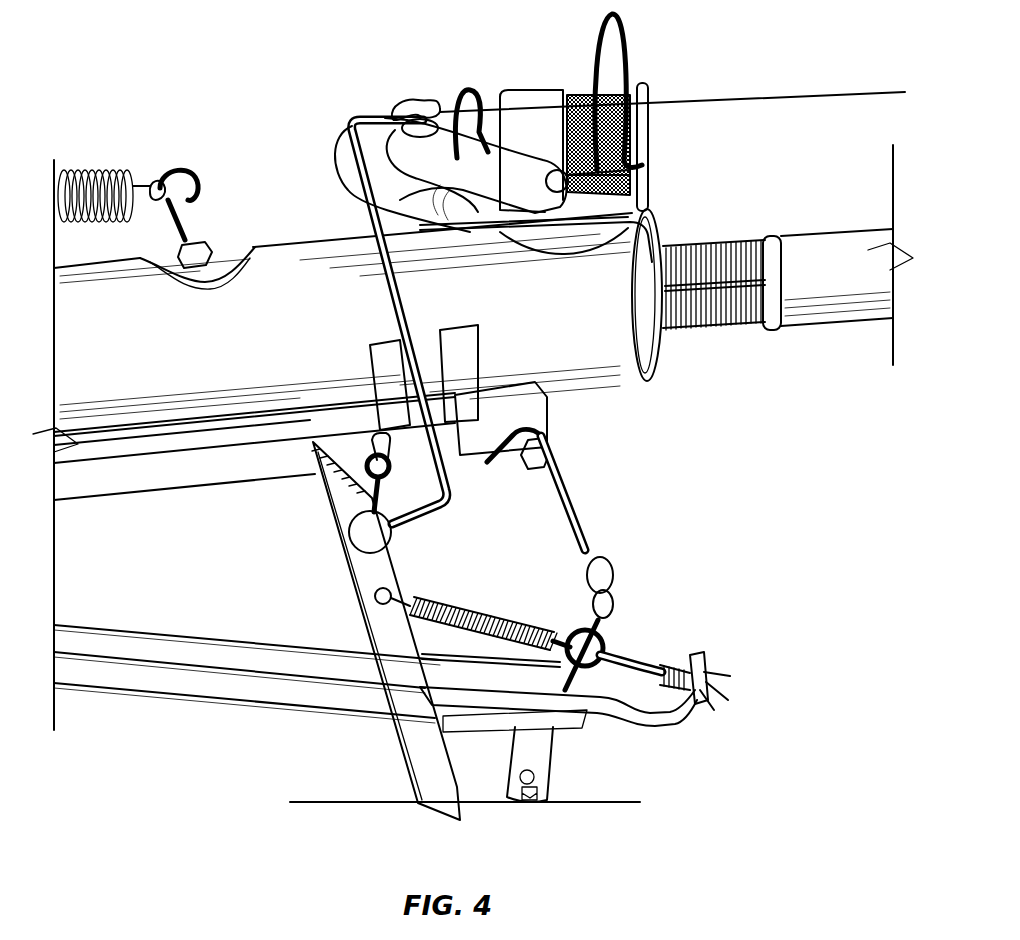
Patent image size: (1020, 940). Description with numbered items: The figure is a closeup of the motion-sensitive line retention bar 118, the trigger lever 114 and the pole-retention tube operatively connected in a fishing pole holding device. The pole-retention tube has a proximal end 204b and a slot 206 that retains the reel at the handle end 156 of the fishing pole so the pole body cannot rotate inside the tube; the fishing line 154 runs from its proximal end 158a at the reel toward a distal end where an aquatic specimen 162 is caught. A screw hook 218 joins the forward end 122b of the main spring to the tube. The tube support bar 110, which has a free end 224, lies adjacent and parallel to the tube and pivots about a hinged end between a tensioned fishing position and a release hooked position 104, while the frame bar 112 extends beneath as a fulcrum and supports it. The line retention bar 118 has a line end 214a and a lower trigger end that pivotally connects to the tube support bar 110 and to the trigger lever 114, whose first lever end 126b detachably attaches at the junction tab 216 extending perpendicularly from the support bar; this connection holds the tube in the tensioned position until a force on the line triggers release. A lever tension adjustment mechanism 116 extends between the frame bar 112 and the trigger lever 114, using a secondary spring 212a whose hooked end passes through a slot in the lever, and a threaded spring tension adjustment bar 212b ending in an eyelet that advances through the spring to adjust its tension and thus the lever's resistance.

The release hooked position 104 is at (237, 348).
The tube support bar 110 is at (115, 487).
The frame bar 112 is at (182, 643).
The trigger lever 114 is at (355, 598).
The lever tension adjustment mechanism 116 is at (642, 583).
The line retention bar 118 is at (366, 216).
The forward end of the spring 122b is at (87, 168).
The first lever end 126b is at (317, 462).
The fishing line 154 is at (755, 97).
The handle end 156 is at (820, 313).
The proximal end of the fishing line 158a is at (472, 100).
The aquatic specimen 162 is at (530, 92).
The proximal end of the pole-retention tube 204b is at (593, 343).
The slot 206 is at (640, 228).
The secondary spring 212a is at (453, 602).
The spring tension adjustment bar 212b is at (658, 668).
The line end 214a is at (428, 97).
The junction tab 216 is at (357, 535).
The screw hook 218 is at (165, 160).
The free end 224 is at (545, 420).